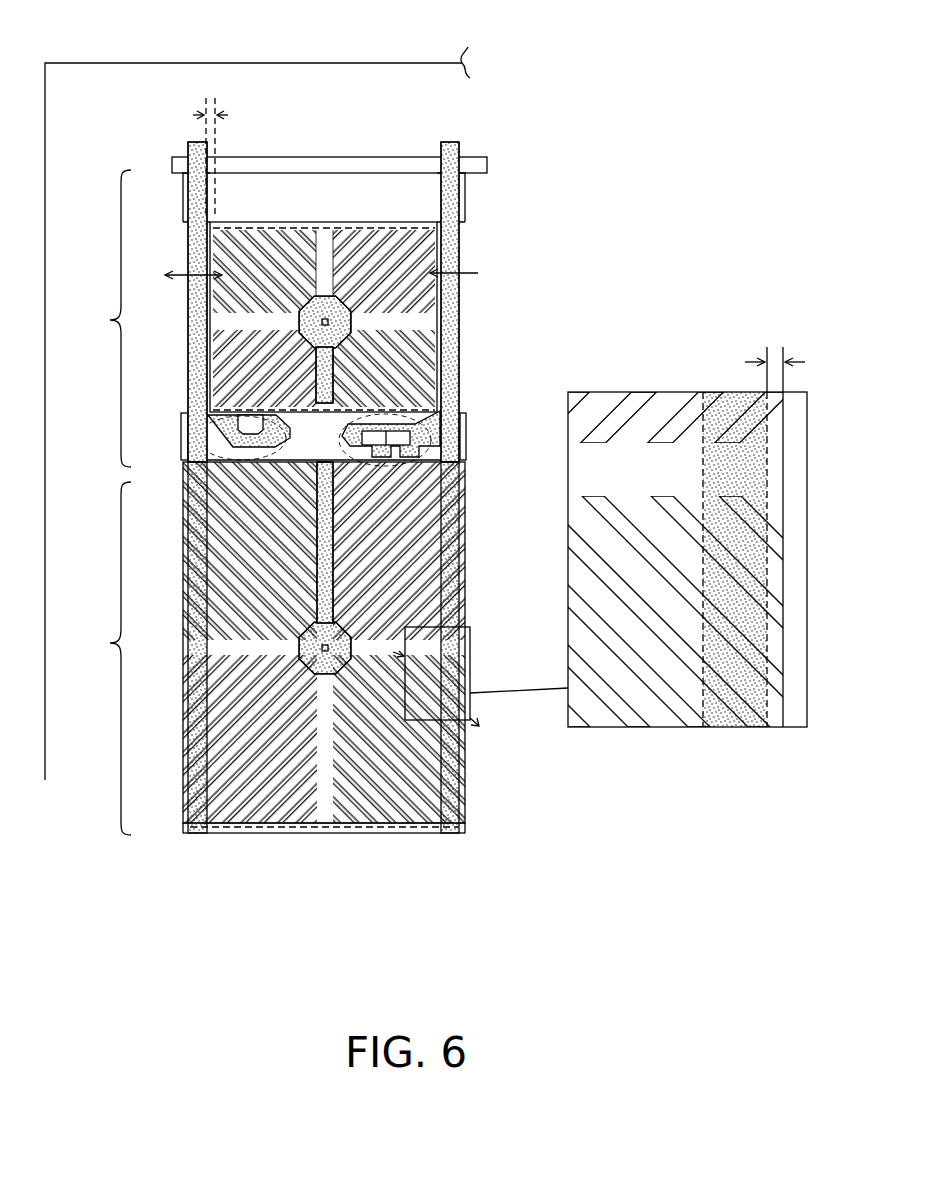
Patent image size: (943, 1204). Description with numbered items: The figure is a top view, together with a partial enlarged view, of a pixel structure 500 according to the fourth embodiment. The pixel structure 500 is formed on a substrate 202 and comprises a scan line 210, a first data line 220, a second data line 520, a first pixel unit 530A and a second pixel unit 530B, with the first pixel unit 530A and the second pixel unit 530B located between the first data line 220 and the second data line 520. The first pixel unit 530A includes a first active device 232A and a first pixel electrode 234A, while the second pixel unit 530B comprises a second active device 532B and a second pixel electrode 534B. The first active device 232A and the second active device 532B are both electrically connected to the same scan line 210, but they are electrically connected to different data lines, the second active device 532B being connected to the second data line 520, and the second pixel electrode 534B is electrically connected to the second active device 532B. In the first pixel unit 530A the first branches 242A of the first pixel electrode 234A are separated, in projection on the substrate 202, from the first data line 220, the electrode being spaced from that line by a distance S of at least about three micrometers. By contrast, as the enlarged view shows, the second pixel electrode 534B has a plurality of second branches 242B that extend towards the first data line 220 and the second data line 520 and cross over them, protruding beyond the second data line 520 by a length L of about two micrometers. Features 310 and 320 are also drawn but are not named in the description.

The substrate 202 is at (306, 63).
The scan line 210 is at (460, 441).
The first data line 220 is at (196, 141).
The first active device 232A is at (184, 385).
The first pixel electrode 234A is at (440, 276).
The first branches 242A is at (257, 292).
The second branches 242B is at (688, 435).
The opening 310 is at (326, 233).
The contact plug region 320 is at (428, 322).
The pixel structure 500 is at (494, 481).
The second data line 520 is at (448, 141).
The first pixel unit 530A is at (93, 318).
The second pixel unit 530B is at (93, 658).
The second active device 532B is at (440, 473).
The second pixel electrode 534B is at (430, 582).